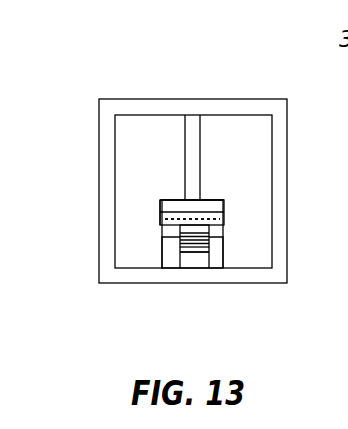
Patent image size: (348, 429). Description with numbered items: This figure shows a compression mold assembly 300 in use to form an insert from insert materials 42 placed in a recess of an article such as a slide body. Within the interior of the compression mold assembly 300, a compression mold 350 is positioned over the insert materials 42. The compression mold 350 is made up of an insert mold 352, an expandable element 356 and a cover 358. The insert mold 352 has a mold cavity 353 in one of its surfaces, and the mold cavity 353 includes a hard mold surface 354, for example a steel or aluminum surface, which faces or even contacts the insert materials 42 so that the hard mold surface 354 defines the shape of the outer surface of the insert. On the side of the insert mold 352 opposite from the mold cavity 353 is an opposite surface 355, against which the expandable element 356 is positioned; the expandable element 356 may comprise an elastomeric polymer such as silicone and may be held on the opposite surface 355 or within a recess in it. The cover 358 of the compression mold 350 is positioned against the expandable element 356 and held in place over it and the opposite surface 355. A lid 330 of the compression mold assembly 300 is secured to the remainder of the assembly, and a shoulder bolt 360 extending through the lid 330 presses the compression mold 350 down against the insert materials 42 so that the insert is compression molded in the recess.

The compression mold assembly 300 is at (83, 72).
The lid 330 is at (137, 107).
The shoulder bolt 360 is at (190, 140).
The expandable element 356 is at (198, 212).
The cover 358 is at (165, 200).
The compression mold 350 is at (151, 212).
The opposite surface 355 is at (224, 202).
The insert mold 352 is at (225, 220).
The mold cavity 353 is at (210, 239).
The hard mold surface 354 is at (254, 254).
The insert materials 42 is at (195, 249).